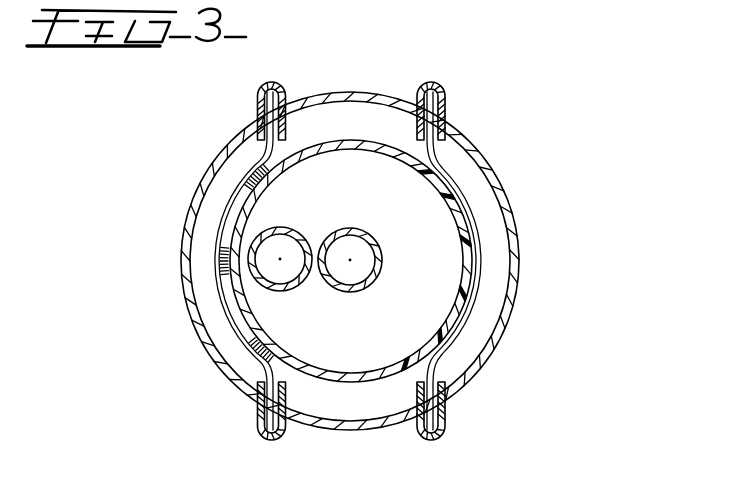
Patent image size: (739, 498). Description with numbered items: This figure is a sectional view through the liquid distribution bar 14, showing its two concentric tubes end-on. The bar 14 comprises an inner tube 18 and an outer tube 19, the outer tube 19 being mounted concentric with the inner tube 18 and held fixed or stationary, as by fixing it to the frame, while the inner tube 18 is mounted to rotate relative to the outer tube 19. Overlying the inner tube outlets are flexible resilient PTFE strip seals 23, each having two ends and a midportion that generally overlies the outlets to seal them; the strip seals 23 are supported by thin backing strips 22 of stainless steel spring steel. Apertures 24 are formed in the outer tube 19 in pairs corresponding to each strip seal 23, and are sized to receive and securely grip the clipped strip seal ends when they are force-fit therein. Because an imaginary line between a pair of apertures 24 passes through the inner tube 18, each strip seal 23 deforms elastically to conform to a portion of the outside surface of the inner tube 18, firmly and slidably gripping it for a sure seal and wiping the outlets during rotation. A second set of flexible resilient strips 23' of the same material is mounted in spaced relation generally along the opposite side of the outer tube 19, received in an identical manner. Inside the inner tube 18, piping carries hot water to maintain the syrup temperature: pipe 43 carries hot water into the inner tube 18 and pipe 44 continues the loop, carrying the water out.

The liquid distribution bar 14 is at (527, 186).
The inner tube 18 is at (366, 140).
The outer tube 19 is at (336, 90).
The backing strips 22 is at (213, 242).
The strip seals 23 is at (482, 270).
The resilient strip members 23' is at (212, 247).
The apertures 24 is at (442, 110).
The pipe 43 is at (355, 227).
The pipe 44 is at (289, 227).